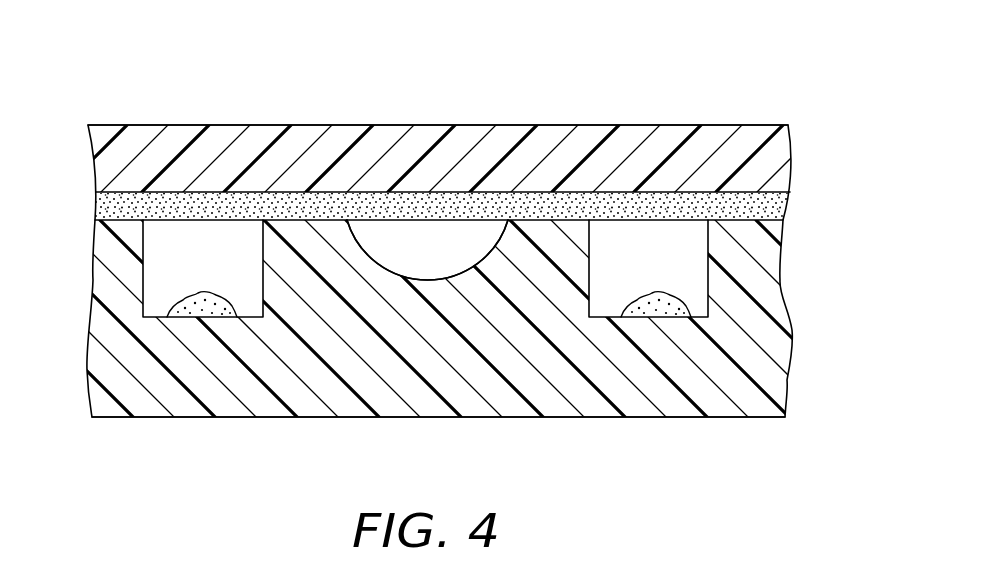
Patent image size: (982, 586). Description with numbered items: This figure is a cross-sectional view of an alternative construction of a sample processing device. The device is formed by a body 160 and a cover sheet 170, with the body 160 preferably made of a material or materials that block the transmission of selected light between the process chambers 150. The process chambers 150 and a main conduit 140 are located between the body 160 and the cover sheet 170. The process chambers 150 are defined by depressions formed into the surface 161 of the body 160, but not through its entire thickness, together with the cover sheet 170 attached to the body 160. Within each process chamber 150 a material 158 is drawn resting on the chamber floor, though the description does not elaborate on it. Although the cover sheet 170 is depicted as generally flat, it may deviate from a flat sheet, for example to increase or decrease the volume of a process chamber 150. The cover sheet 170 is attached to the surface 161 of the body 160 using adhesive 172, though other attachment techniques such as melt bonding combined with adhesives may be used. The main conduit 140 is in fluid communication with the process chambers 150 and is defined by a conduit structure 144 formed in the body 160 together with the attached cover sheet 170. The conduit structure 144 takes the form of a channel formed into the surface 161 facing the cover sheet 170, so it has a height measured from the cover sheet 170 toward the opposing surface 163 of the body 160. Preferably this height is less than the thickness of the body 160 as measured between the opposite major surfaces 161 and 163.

The main conduit 140 is at (460, 262).
The conduit structure 144 is at (381, 226).
The process chambers 150 is at (237, 267).
The conductive material 158 is at (190, 303).
The body 160 is at (770, 337).
The surface 161 is at (290, 219).
The opposing surface 163 is at (435, 418).
The cover sheet 170 is at (768, 162).
The adhesive 172 is at (770, 207).